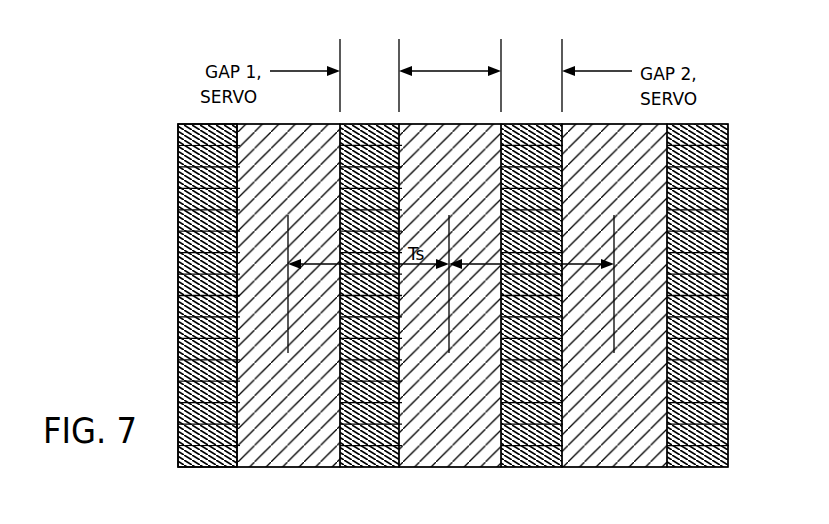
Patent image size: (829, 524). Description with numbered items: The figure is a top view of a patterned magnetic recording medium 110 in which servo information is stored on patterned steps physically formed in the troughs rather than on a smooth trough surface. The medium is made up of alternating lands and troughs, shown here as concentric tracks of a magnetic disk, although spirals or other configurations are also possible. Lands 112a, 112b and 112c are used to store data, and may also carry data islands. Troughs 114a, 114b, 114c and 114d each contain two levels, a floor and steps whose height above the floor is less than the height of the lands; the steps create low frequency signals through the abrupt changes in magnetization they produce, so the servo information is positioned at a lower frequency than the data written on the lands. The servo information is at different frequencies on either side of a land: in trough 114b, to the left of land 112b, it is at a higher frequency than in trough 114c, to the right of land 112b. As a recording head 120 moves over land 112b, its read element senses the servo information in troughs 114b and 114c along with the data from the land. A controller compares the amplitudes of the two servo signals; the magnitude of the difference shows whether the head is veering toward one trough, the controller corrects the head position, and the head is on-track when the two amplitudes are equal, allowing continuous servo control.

The patterned magnetic recording medium 110 is at (66, 180).
The land 112a is at (305, 181).
The land 112b is at (487, 181).
The land 112c is at (640, 181).
The trough 114a is at (215, 467).
The trough 114b is at (362, 467).
The trough 114c is at (523, 467).
The trough 114d is at (683, 467).
The recording head 120 is at (178, 248).